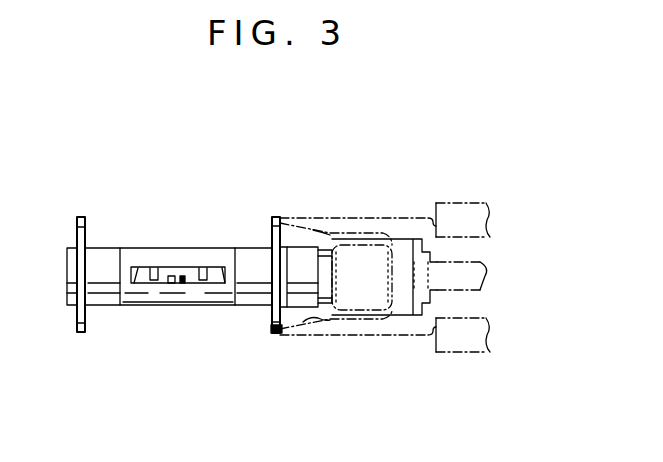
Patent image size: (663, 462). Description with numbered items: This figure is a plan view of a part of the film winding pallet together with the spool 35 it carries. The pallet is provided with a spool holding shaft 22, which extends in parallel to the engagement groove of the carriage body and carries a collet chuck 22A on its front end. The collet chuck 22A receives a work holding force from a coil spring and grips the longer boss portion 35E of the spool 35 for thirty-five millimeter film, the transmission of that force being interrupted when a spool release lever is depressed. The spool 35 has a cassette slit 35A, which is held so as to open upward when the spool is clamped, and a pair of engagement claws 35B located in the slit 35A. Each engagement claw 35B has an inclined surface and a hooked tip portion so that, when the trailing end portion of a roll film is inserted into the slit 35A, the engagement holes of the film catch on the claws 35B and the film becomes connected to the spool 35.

The spool 35 is at (193, 242).
The cassette slit 35A is at (145, 268).
The engagement claws 35B is at (200, 283).
The longer boss portion 35E is at (302, 258).
The collet chuck 22A is at (290, 326).
The spool holding shaft 22 is at (360, 335).